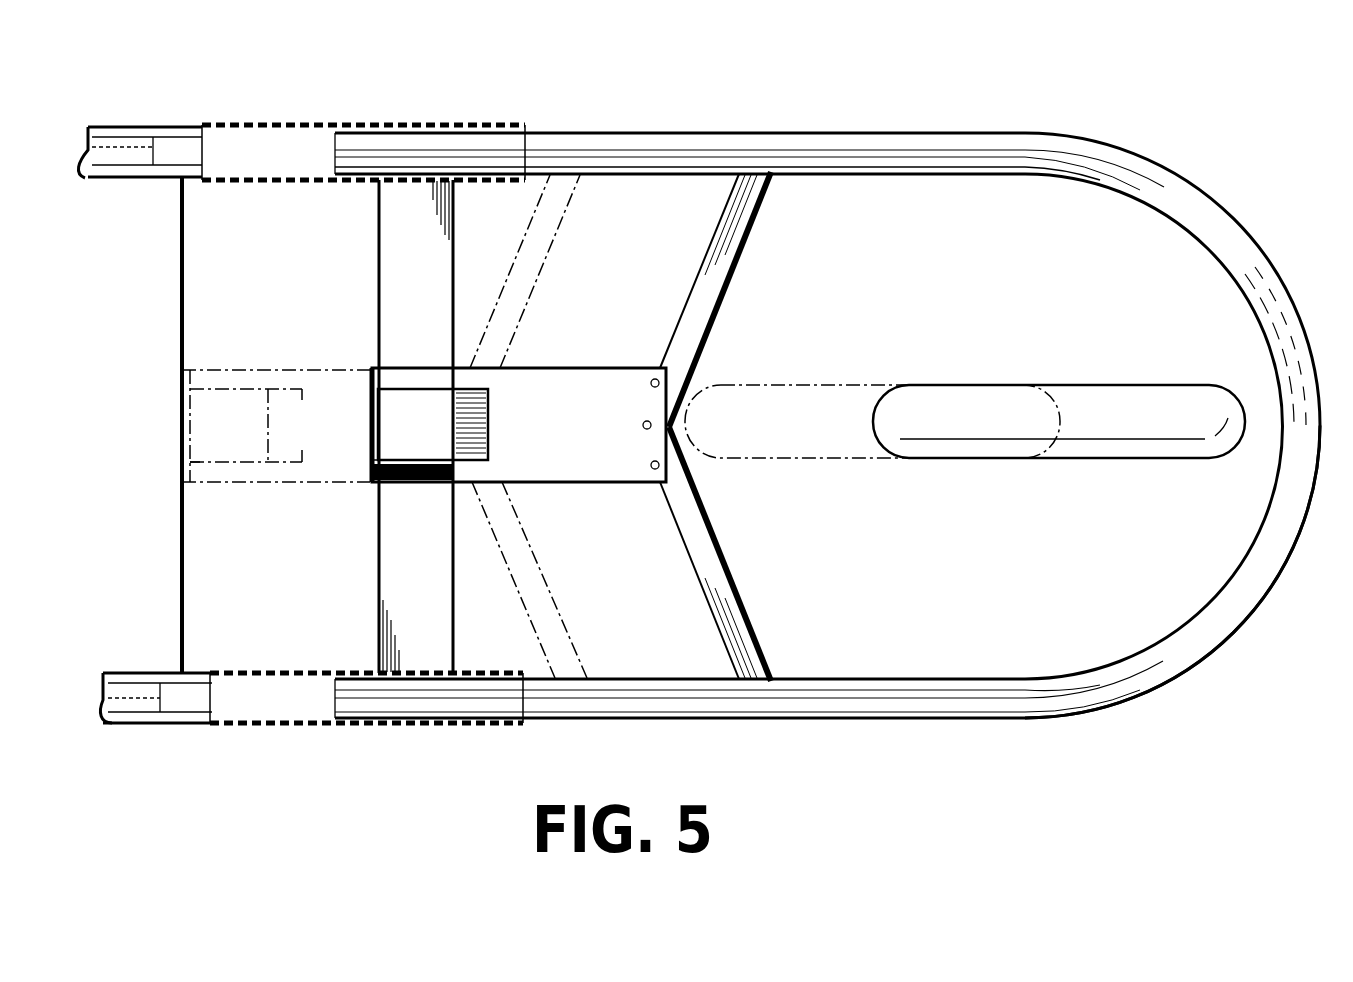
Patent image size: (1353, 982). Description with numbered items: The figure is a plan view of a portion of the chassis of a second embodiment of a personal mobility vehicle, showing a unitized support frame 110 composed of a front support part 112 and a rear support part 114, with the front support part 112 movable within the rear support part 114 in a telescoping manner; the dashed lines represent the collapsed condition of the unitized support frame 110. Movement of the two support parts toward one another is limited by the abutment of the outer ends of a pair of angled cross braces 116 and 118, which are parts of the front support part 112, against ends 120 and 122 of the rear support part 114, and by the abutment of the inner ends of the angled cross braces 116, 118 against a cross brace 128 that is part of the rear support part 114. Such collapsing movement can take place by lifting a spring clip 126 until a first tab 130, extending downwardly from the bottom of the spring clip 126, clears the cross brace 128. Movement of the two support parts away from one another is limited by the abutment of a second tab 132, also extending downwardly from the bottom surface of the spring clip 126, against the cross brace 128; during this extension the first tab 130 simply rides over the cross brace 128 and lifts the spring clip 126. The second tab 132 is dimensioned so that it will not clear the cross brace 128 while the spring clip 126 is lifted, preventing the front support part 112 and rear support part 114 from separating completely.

The unitized support frame 110 is at (1252, 642).
The front support part 112 is at (1255, 270).
The rear support part 114 is at (392, 723).
The angled cross brace 116 is at (538, 580).
The angled cross brace 118 is at (556, 244).
The end of rear support part 120 is at (524, 722).
The end of rear support part 122 is at (528, 128).
The spring clip 126 is at (245, 370).
The cross brace 128 is at (383, 553).
The first tab 130 is at (270, 462).
The second tab 132 is at (207, 464).